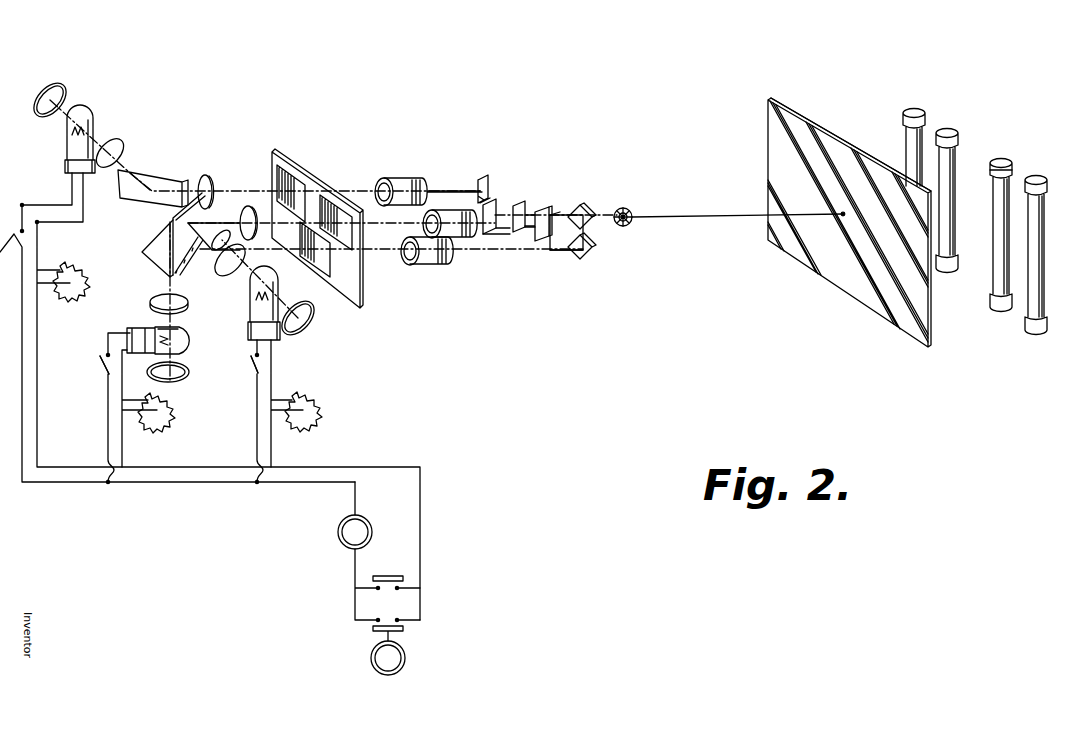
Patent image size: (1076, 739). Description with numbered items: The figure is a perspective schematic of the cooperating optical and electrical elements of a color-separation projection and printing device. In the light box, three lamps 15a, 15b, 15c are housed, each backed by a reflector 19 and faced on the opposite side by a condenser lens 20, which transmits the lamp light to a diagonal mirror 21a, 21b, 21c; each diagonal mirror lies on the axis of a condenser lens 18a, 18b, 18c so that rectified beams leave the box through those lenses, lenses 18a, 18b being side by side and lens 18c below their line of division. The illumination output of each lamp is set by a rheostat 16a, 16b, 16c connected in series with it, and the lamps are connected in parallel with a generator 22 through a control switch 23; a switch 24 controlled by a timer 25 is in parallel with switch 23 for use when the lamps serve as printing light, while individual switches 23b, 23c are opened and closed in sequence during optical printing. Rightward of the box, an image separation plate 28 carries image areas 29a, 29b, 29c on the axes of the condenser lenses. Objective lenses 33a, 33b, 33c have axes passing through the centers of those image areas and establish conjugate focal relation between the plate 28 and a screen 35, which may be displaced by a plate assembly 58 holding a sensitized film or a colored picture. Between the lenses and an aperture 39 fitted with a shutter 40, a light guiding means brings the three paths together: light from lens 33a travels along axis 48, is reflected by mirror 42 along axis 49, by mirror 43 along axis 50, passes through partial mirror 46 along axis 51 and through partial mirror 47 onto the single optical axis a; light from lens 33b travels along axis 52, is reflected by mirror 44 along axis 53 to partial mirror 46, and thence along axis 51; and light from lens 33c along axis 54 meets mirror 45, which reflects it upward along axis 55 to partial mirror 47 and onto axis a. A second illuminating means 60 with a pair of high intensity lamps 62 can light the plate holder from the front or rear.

The lamp 15a is at (90, 112).
The lamp 15b is at (254, 310).
The lamp 15c is at (188, 348).
The rheostat 16a is at (80, 272).
The rheostat 16b is at (320, 406).
The rheostat 16c is at (160, 428).
The condenser lens 18a is at (208, 182).
The condenser lens 18b is at (254, 228).
The condenser lens 18c is at (220, 238).
The reflector 19 is at (42, 88).
The condenser lens 20 is at (116, 150).
The diagonal mirror 21a is at (155, 185).
The diagonal mirror 21b is at (200, 258).
The diagonal mirror 21c is at (150, 262).
The generator 22 is at (338, 532).
The control switch 23 is at (387, 575).
The switch 23b is at (255, 368).
The switch 23c is at (103, 370).
The switch 24 is at (372, 630).
The timer 25 is at (406, 663).
The image separation plate 28 is at (318, 186).
The image area 29a is at (284, 160).
The image area 29b is at (340, 205).
The image area 29c is at (360, 293).
The objective lens 33a is at (405, 182).
The objective lens 33b is at (460, 240).
The objective lens 33c is at (438, 264).
The screen 35 is at (866, 288).
The aperture 39 is at (628, 209).
The shutter 40 is at (633, 220).
The full reflecting mirror 42 is at (482, 178).
The full reflecting mirror 43 is at (492, 236).
The full reflecting mirror 44 is at (566, 232).
The full reflecting mirror 45 is at (594, 254).
The partial mirror 46 is at (532, 213).
The partial mirror 47 is at (590, 208).
The axis 48 is at (442, 190).
The axis 49 is at (492, 202).
The axis 50 is at (516, 206).
The axis 51 is at (558, 214).
The axis 52 is at (518, 235).
The axis 53 is at (538, 240).
The axis 54 is at (566, 252).
The axis 55 is at (590, 234).
The plate assembly 58 is at (810, 132).
The second illuminating means 60 is at (1012, 113).
The high intensity lamp 62 is at (948, 134).
The optical axis a— a is at (861, 227).